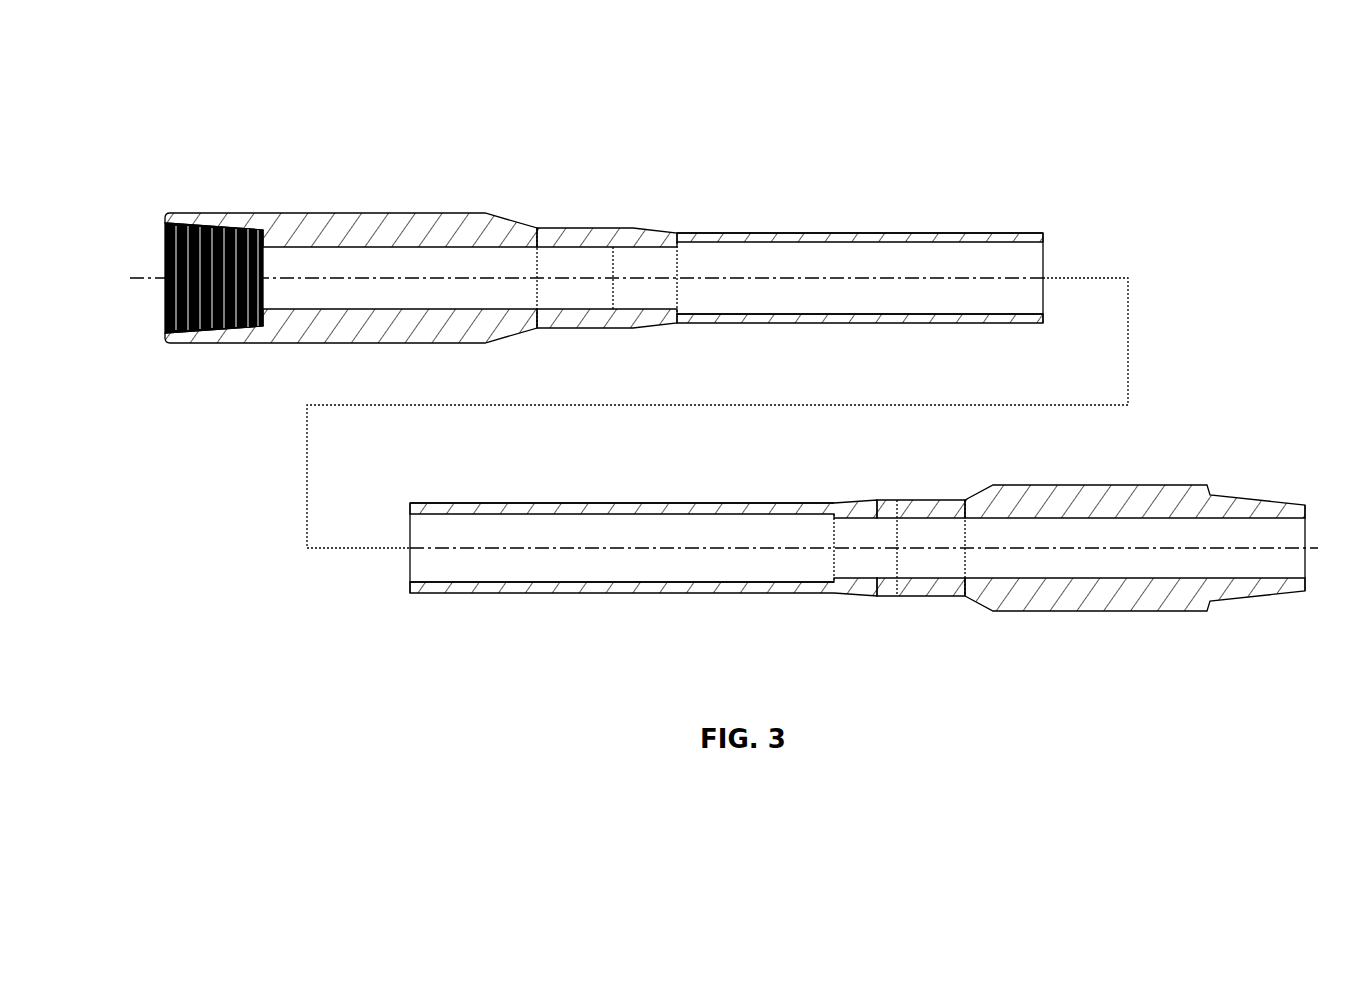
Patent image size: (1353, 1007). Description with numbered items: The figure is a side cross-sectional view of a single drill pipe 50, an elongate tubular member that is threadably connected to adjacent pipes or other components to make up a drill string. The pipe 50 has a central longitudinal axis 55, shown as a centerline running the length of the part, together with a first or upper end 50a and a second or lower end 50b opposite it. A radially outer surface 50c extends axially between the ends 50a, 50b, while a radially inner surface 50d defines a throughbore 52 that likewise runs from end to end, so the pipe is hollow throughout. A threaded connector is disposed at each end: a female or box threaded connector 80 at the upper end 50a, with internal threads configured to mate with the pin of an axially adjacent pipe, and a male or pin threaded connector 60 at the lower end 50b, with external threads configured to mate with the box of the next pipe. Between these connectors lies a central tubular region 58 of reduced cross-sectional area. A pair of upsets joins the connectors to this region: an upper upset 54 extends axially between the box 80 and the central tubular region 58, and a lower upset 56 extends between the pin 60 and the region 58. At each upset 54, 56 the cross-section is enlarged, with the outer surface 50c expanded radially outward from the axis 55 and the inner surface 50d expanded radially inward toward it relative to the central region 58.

The drill pipe 50 is at (1010, 82).
The upper end 50a is at (162, 216).
The lower end 50b is at (1310, 594).
The radially outer surface 50c is at (716, 232).
The radially inner surface 50d is at (808, 312).
The throughbore 52 is at (1016, 262).
The upper upset 54 is at (586, 226).
The longitudinal axis 55 is at (497, 282).
The lower upset 56 is at (917, 602).
The central tubular region 58 is at (893, 229).
The pin threaded connector 60 is at (1109, 617).
The box threaded connector 80 is at (317, 211).